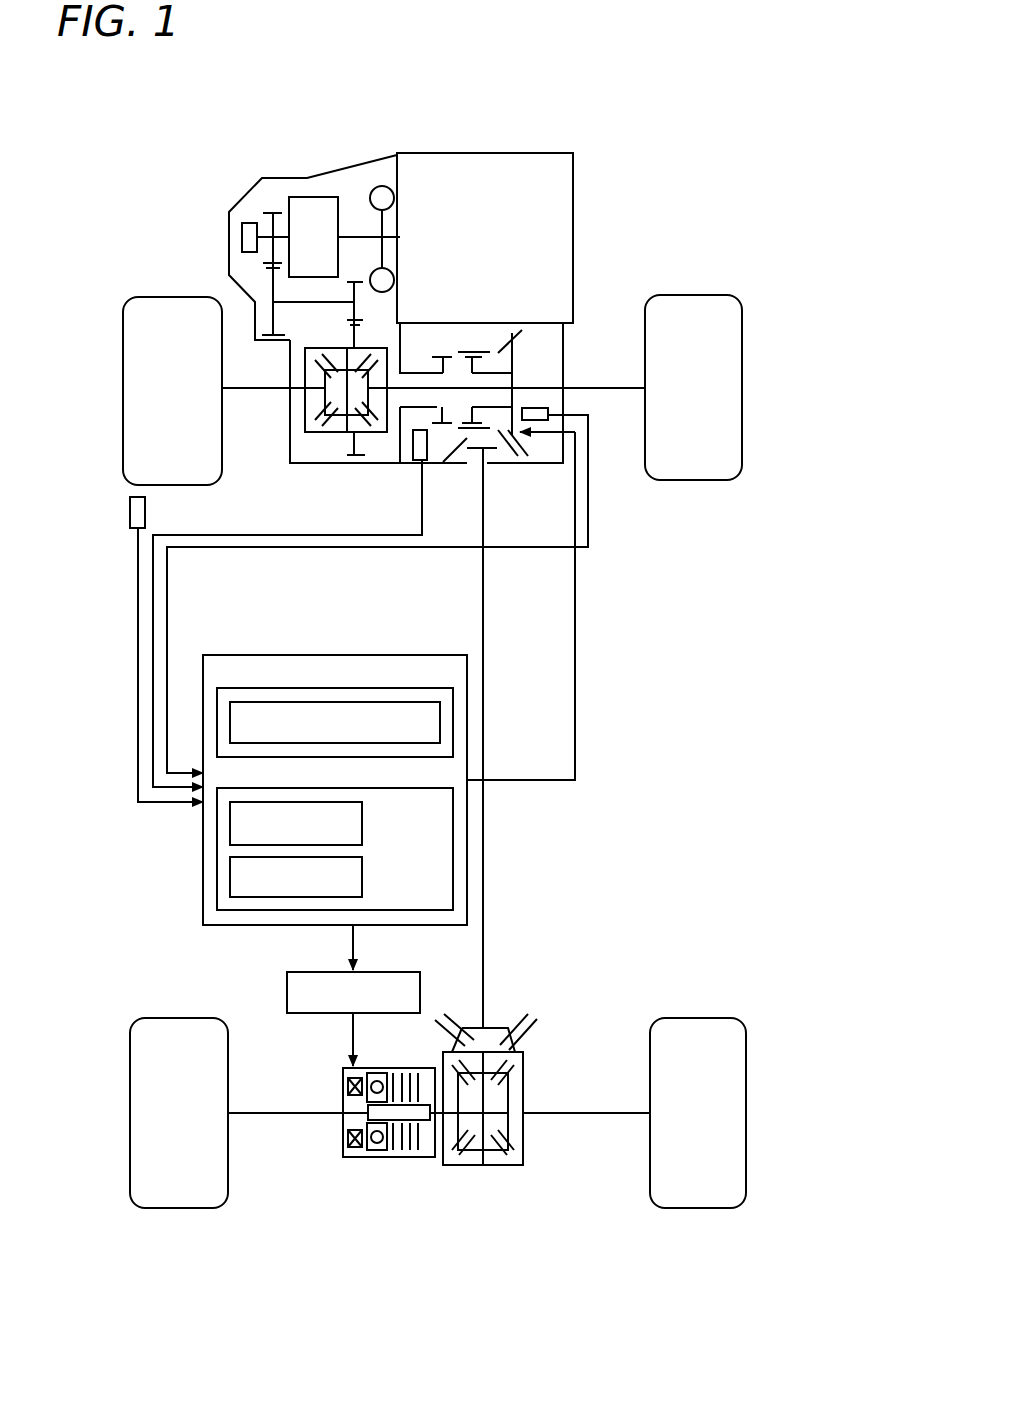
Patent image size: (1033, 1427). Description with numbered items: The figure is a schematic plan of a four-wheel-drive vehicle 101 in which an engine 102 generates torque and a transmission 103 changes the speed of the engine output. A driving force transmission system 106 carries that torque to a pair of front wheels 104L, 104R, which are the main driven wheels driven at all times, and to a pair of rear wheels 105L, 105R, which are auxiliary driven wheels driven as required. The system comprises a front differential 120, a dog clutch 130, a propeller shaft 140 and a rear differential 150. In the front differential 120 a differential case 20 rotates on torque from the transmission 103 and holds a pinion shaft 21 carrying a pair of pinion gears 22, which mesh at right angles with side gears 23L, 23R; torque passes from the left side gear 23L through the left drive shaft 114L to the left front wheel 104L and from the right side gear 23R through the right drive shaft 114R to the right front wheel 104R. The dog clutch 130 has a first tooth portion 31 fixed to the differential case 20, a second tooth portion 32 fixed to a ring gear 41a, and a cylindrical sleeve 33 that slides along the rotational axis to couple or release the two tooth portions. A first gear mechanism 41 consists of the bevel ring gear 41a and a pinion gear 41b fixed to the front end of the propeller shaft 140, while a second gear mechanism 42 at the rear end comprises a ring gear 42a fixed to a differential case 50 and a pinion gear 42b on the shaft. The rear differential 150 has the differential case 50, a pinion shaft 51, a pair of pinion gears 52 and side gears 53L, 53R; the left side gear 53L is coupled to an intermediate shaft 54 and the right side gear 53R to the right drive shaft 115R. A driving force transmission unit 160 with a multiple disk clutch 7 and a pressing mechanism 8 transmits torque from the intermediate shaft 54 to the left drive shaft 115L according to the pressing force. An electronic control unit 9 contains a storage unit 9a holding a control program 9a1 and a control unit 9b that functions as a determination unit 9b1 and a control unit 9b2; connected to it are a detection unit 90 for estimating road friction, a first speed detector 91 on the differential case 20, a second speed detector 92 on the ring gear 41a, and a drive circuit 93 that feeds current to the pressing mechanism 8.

The four-wheel-drive vehicle 101 is at (648, 85).
The engine 102 is at (460, 152).
The transmission 103 is at (302, 175).
The left front wheel 104L is at (123, 392).
The right front wheel 104R is at (743, 378).
The left rear wheel 105L is at (130, 1113).
The right rear wheel 105R is at (746, 1113).
The driving force transmission system 106 is at (652, 588).
The left drive shaft 114L is at (275, 390).
The right drive shaft 114R is at (573, 383).
The left drive shaft 115L is at (293, 1116).
The right drive shaft 115R is at (567, 1114).
The front differential 120 is at (275, 442).
The differential case 20 is at (363, 432).
The pinion shaft 21 is at (345, 415).
The pinion gears 22 is at (342, 366).
The left side gear 23L is at (312, 400).
The right side gear 23R is at (373, 397).
The dog clutch 130 is at (477, 342).
The first tooth portion 31 is at (428, 378).
The second tooth portion 32 is at (470, 424).
The cylindrical sleeve 33 is at (480, 349).
The first gear mechanism 41 is at (594, 488).
The ring gear 41a is at (513, 440).
The pinion gear 41b is at (525, 458).
The propeller shaft 140 is at (490, 880).
The second gear mechanism 42 is at (535, 993).
The ring gear 42a is at (468, 1018).
The pinion gear 42b is at (510, 1020).
The rear differential 150 is at (533, 1147).
The differential case 50 is at (503, 1165).
The pinion shaft 51 is at (483, 1110).
The pinion gears 52 is at (500, 1073).
The left side gear 53L is at (467, 1168).
The right side gear 53R is at (508, 1087).
The intermediate shaft 54 is at (445, 1112).
The driving force transmission unit 160 is at (224, 1273).
The multiple disk clutch 7 is at (398, 1163).
The pressing mechanism 8 is at (357, 1160).
The electronic control unit 9 is at (218, 655).
The storage unit 9a is at (340, 688).
The control program 9a1 is at (402, 702).
The control unit 9b is at (283, 789).
The determination unit 9b1 is at (363, 821).
The control unit 9b2 is at (363, 874).
The detection unit 90 is at (130, 514).
The first speed detector 91 is at (423, 462).
The second speed detector 92 is at (532, 407).
The drive circuit 93 is at (392, 971).